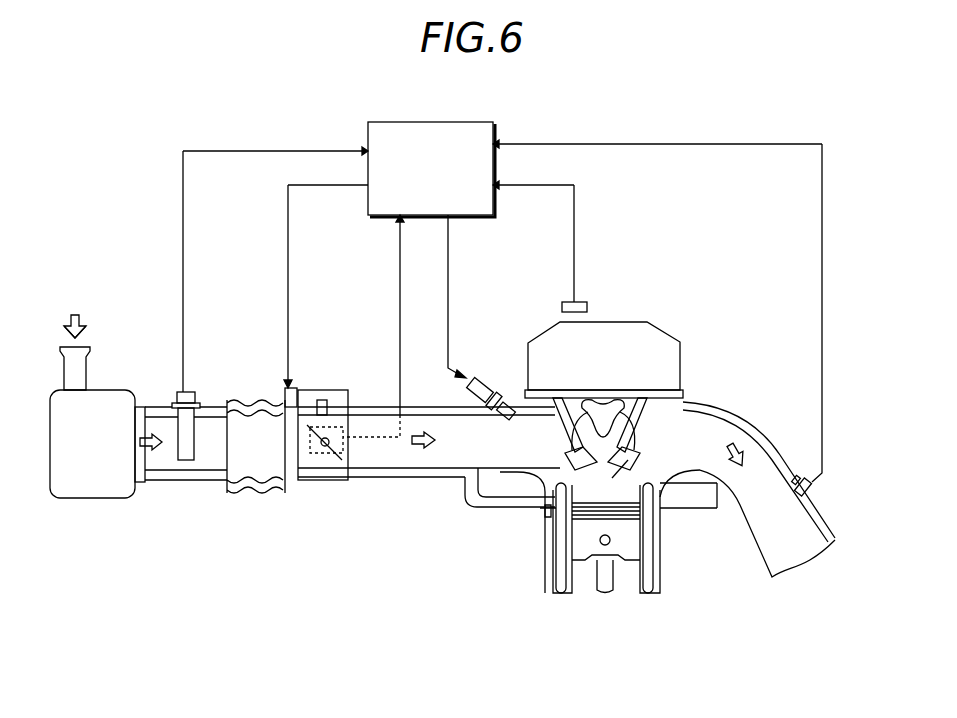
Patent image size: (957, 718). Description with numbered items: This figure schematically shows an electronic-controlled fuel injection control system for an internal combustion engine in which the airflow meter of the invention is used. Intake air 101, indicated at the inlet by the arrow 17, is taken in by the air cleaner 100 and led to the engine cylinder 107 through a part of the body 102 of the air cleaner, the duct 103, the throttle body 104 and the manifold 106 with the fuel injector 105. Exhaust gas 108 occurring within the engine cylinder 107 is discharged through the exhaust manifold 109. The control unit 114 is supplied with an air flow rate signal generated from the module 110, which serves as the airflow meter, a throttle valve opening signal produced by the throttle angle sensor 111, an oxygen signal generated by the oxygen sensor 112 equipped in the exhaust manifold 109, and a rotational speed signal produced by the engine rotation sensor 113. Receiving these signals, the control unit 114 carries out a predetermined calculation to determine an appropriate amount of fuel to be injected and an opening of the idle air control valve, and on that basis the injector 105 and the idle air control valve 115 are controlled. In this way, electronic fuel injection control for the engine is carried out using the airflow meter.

The intake air 17 is at (75, 315).
The intake air 101 is at (86, 324).
The air cleaner 100 is at (97, 407).
The body of the air cleaner 102 is at (180, 482).
The module 110 is at (180, 390).
The duct 103 is at (247, 403).
The idle air control valve 115 is at (284, 388).
The throttle body 104 is at (332, 480).
The throttle angle sensor 111 is at (312, 452).
The manifold 106 is at (413, 407).
The fuel injector 105 is at (470, 378).
The engine rotation sensor 113 is at (587, 305).
The control unit 114 is at (495, 128).
The engine cylinder 107 is at (645, 455).
The exhaust gas 108 is at (737, 447).
The exhaust manifold 109 is at (767, 440).
The oxygen sensor 112 is at (810, 480).